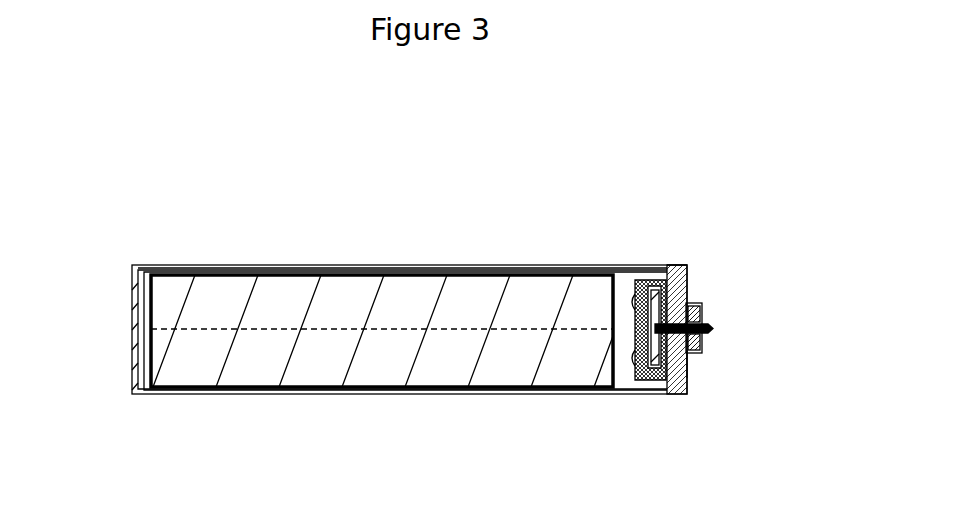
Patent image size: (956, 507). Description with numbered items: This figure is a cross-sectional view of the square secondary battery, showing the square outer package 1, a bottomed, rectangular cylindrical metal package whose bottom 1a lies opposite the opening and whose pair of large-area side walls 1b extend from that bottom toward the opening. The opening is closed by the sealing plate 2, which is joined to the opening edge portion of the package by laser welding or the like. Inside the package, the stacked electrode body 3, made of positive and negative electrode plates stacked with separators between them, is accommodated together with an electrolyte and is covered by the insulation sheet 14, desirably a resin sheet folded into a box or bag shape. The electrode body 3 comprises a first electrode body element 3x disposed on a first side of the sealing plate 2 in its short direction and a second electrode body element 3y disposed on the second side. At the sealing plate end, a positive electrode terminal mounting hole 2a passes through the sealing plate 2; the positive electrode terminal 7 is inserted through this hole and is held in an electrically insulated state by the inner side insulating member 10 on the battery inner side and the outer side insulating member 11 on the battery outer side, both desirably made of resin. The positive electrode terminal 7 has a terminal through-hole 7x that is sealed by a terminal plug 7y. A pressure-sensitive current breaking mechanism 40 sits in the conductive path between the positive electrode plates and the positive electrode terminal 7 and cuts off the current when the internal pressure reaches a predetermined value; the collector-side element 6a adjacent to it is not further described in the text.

The square outer package 1 is at (322, 394).
The bottom 1a is at (137, 322).
The large-area side walls 1b is at (300, 265).
The insulation sheet 14 is at (177, 265).
The sealing plate 2 is at (688, 388).
The positive electrode terminal mounting hole 2a is at (688, 362).
The electrode body 3 is at (528, 197).
The first electrode body element 3x is at (468, 308).
The second electrode body element 3y is at (520, 350).
The current collector tab 6a is at (643, 285).
The positive electrode terminal 7 is at (705, 318).
The terminal through-hole 7x is at (701, 312).
The terminal plug 7y is at (701, 338).
The inner side insulating member 10 is at (682, 268).
The outer side insulating member 11 is at (702, 308).
The pressure-sensitive current breaking mechanism 40 is at (661, 276).